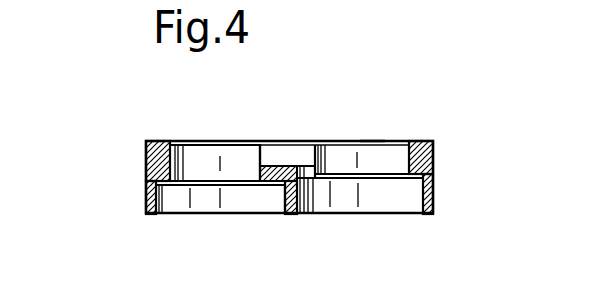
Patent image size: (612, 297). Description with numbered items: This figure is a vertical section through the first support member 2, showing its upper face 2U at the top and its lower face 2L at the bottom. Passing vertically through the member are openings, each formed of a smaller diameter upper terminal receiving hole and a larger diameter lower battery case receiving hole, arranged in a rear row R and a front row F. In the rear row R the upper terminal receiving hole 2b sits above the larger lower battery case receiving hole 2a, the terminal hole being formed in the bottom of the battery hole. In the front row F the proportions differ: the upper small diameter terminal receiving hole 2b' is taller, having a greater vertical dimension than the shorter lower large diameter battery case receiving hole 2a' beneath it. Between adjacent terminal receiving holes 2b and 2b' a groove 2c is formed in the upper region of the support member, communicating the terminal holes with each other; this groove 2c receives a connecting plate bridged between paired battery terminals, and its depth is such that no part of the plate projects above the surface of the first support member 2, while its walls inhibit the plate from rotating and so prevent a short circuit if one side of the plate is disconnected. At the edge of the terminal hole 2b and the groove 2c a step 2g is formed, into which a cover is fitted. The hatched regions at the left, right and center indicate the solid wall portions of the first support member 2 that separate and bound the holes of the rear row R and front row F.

The first support member 2 is at (429, 139).
The upper face 2U is at (152, 141).
The lower face 2L is at (279, 214).
The lower battery case receiving hole 2a is at (360, 221).
The lower large diameter battery case receiving hole 2a' is at (220, 230).
The upper terminal receiving hole 2b is at (356, 117).
The upper small diameter terminal receiving hole 2b' is at (205, 120).
The groove 2c is at (283, 151).
The step 2g is at (372, 139).
The front row F is at (217, 131).
The rear row R is at (417, 233).